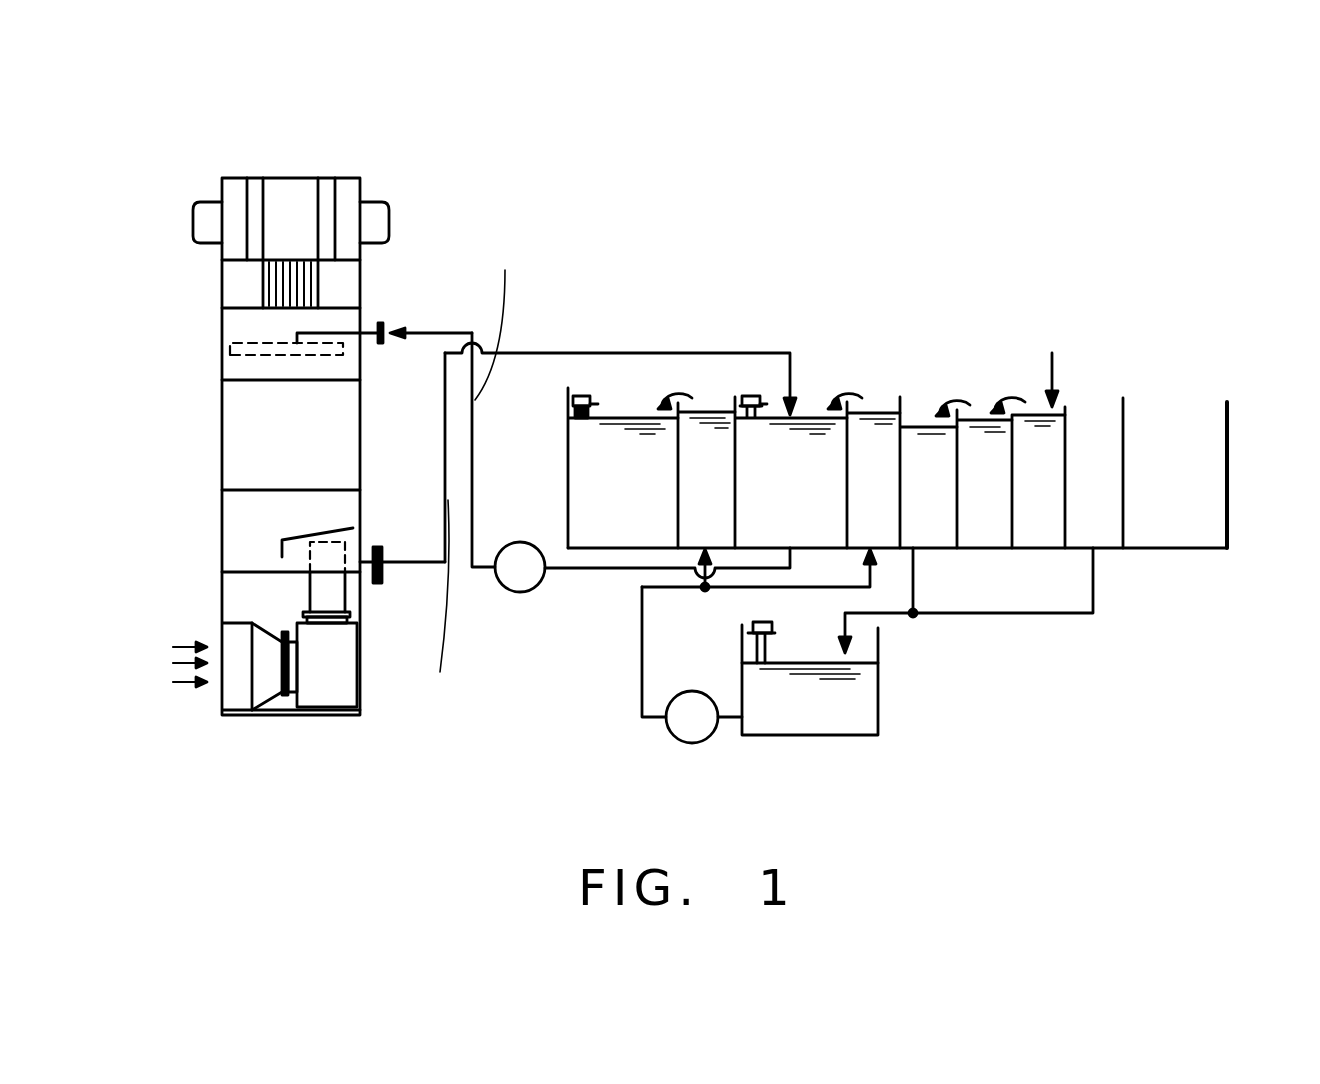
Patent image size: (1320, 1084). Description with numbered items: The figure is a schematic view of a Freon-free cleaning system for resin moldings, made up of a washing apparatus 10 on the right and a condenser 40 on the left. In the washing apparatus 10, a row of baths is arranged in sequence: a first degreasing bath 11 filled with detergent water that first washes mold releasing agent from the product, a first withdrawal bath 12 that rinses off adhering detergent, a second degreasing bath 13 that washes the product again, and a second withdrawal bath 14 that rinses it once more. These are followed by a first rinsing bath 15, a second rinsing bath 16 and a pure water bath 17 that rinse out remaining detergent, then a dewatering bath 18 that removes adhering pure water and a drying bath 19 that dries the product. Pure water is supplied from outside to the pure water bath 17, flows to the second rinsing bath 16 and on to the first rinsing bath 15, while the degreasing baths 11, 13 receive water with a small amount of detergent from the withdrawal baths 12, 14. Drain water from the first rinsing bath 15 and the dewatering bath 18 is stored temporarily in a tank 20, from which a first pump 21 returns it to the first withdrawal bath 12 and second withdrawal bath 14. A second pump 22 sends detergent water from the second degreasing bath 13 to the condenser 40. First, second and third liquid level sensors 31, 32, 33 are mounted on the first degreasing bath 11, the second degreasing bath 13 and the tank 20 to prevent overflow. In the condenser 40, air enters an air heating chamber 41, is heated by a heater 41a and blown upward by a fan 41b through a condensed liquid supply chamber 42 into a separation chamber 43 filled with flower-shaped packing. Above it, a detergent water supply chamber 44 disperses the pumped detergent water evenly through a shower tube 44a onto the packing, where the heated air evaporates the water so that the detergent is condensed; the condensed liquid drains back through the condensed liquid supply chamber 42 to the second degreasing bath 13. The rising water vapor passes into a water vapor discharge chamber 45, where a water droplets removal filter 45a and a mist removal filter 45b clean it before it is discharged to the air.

The washing apparatus 10 is at (1046, 630).
The first degreasing bath 11 is at (627, 413).
The first withdrawal bath 12 is at (710, 400).
The second degreasing bath 13 is at (812, 420).
The second withdrawal bath 14 is at (875, 405).
The first rinsing bath 15 is at (922, 423).
The second rinsing bath 16 is at (980, 417).
The pure water bath 17 is at (1050, 553).
The dewatering bath 18 is at (1098, 425).
The drying bath 19 is at (1180, 427).
The tank 20 is at (832, 732).
The first pump 21 is at (695, 732).
The second pump 22 is at (520, 592).
The first liquid level sensor 31 is at (578, 396).
The second liquid level sensor 32 is at (750, 396).
The third liquid level sensor 33 is at (753, 627).
The condenser 40 is at (227, 161).
The air heating chamber 41 is at (238, 600).
The heater 41a is at (237, 698).
The fan 41b is at (333, 698).
The condensed liquid supply chamber 42 is at (235, 528).
The separation chamber 43 is at (235, 435).
The detergent water supply chamber 44 is at (240, 322).
The shower tube 44a is at (240, 338).
The water vapor discharge chamber 45 is at (232, 248).
The water droplets removal filter 45a is at (307, 292).
The mist removal filter 45b is at (257, 193).